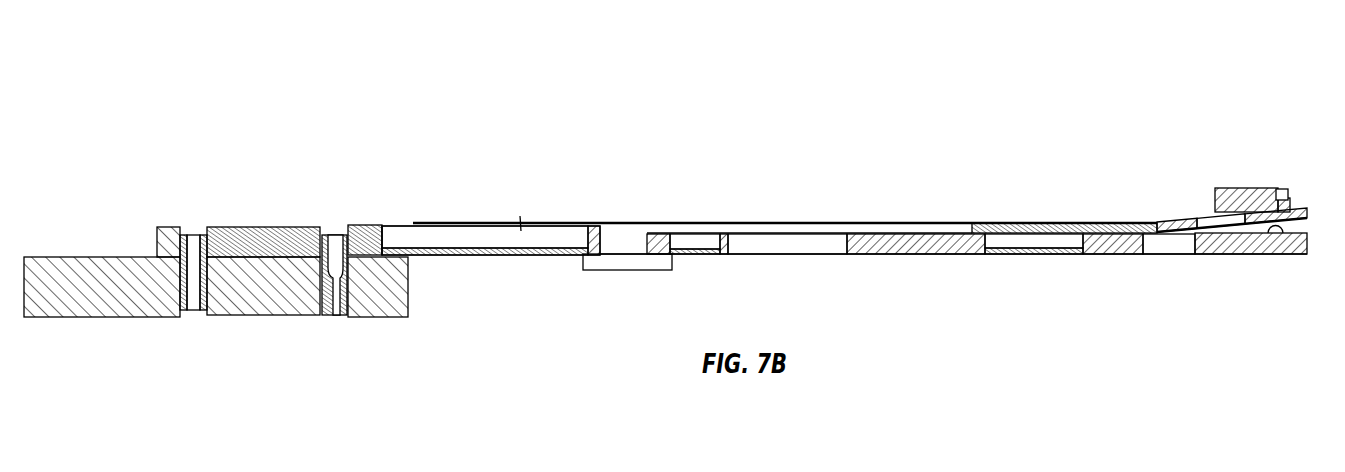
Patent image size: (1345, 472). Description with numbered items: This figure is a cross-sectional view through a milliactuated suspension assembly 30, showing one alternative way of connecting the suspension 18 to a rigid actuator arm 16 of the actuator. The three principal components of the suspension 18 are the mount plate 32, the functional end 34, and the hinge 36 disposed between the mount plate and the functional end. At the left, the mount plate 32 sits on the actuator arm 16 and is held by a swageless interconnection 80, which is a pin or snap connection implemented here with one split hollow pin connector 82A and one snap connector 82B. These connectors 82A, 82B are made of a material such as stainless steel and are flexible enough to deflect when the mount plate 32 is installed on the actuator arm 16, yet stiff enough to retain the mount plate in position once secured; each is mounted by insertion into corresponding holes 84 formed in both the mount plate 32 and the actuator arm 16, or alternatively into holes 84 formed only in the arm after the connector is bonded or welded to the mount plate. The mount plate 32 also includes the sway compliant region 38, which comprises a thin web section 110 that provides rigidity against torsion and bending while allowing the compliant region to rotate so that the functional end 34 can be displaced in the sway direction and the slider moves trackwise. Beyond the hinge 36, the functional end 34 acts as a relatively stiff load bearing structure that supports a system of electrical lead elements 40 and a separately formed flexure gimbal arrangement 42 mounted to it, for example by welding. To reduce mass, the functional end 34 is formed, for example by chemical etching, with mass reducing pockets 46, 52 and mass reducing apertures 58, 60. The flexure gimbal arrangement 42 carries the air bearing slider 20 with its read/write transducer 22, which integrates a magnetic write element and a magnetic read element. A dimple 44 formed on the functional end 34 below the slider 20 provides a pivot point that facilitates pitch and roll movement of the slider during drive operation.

The suspension assembly 30 is at (232, 108).
The milliactuated suspension 18 is at (692, 145).
The flexure gimbal arrangement 42 is at (1016, 183).
The air bearing slider 20 is at (1222, 190).
The read/write transducer 22 is at (1286, 189).
The swageless interconnection 80 is at (78, 240).
The split hollow pin connector 82A is at (195, 257).
The snap connector 82B is at (340, 300).
The holes 84 is at (203, 227).
The mount plate 32 is at (258, 230).
The actuator arm 16 is at (278, 310).
The sway compliant region 38 is at (418, 228).
The thin web section 110 is at (490, 253).
The hinge 36 is at (620, 270).
The mass reducing pocket 46 is at (708, 247).
The electrical lead elements 40 is at (670, 224).
The mass reducing aperture 58 is at (782, 250).
The functional end 34 is at (862, 250).
The mass reducing pocket 52 is at (1013, 248).
The mass reducing aperture 60 is at (1153, 250).
The dimple 44 is at (1270, 238).